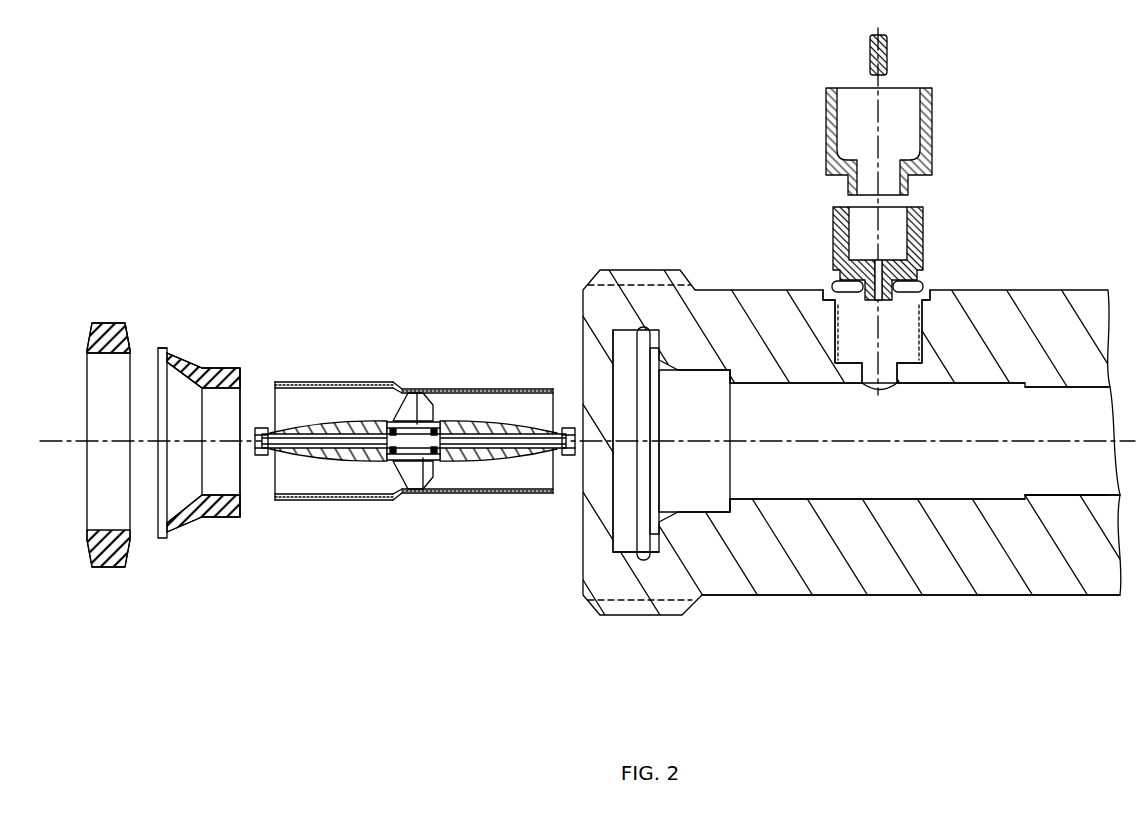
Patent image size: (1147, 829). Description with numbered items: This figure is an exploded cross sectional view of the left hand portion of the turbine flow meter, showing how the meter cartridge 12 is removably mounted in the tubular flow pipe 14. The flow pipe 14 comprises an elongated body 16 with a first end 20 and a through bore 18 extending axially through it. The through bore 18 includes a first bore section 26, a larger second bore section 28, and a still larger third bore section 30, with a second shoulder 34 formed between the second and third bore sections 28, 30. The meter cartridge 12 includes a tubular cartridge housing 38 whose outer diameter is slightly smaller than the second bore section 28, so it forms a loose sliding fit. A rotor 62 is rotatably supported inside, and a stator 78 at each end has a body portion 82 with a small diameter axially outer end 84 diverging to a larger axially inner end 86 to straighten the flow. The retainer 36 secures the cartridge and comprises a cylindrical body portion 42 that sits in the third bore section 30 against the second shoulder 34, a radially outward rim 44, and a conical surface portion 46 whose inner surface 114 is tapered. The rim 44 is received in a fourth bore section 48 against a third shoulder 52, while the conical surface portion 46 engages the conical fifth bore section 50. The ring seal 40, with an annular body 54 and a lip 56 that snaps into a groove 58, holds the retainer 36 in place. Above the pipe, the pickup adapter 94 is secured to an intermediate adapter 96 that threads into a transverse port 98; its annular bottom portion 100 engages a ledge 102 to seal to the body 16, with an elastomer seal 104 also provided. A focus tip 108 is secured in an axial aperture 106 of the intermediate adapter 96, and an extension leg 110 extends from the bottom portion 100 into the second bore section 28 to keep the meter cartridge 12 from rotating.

The meter cartridge 12 is at (360, 506).
The flow pipe 14 is at (945, 600).
The body 16 is at (865, 597).
The through bore 18 is at (1050, 424).
The first end 20 is at (667, 617).
The first bore section 26 is at (1047, 496).
The second bore section 28 is at (900, 498).
The third bore section 30 is at (698, 512).
The second shoulder 34 is at (728, 498).
The retainer 36 is at (210, 522).
The cartridge housing 38 is at (338, 383).
The ring seal 40 is at (105, 572).
The body portion 42 is at (238, 370).
The rim 44 is at (170, 352).
The conical surface portion 46 is at (192, 368).
The fourth bore section 48 is at (655, 526).
The fifth bore section 50 is at (657, 533).
The third shoulder 52 is at (648, 535).
The annular body 54 is at (108, 322).
The lip 56 is at (128, 325).
The groove 58 is at (613, 552).
The rotor 62 is at (431, 393).
The stator 78 is at (506, 391).
The body portion 82 is at (487, 464).
The axially outer end 84 is at (553, 453).
The axially inner end 86 is at (437, 463).
The pickup adapter 94 is at (933, 121).
The intermediate adapter 96 is at (925, 226).
The transverse port 98 is at (932, 296).
The bottom portion 100 is at (840, 289).
The ledge 102 is at (924, 358).
The elastomer seal 104 is at (905, 288).
The axial aperture 106 is at (878, 262).
The focus tip 108 is at (888, 52).
The extension leg 110 is at (862, 303).
The inner surface 114 is at (181, 378).